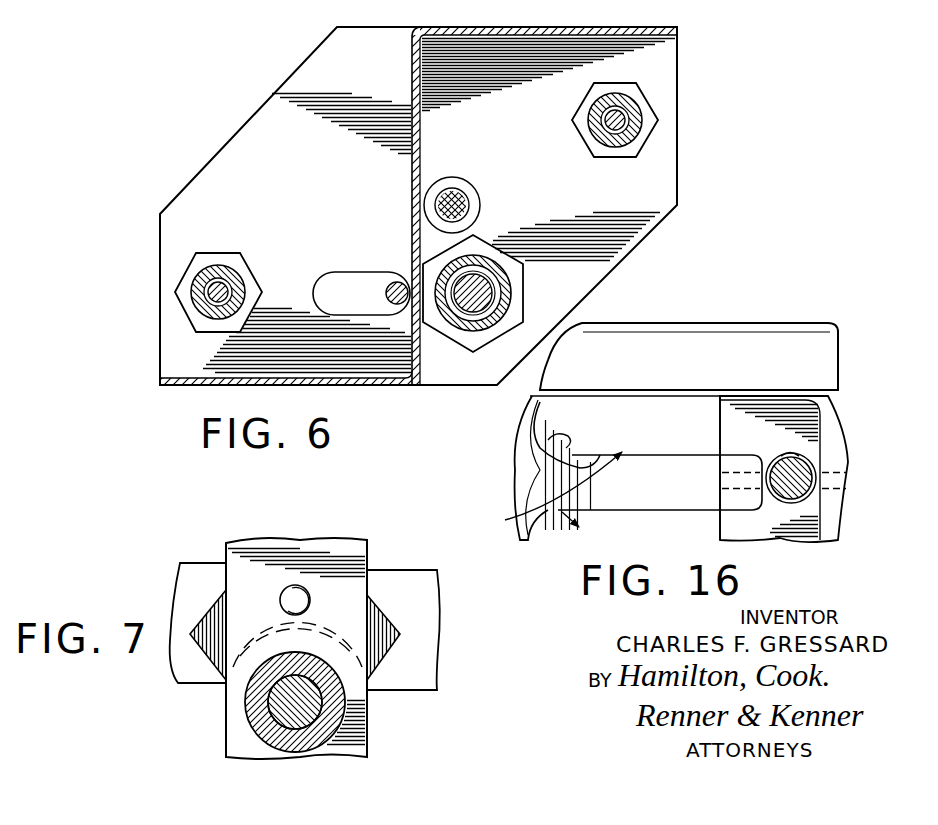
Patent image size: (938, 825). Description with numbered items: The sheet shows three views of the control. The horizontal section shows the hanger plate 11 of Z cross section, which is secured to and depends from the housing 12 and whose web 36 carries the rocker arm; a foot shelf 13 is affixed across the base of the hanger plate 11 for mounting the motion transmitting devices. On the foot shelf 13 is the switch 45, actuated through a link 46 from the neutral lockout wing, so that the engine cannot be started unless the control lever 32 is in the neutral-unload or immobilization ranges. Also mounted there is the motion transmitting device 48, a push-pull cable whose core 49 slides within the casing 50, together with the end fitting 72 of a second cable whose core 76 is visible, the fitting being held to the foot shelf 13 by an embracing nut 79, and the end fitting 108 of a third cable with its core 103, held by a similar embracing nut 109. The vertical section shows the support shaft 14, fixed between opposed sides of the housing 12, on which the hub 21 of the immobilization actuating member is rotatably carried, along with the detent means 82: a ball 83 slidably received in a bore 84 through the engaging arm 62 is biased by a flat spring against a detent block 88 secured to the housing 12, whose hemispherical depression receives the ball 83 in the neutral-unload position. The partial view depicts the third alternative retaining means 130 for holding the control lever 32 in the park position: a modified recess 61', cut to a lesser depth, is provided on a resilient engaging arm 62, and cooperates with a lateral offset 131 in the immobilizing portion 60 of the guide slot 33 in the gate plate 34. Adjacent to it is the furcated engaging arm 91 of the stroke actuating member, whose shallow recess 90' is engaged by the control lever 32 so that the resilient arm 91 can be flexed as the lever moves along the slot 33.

In FIG. 6, the hanger plate 11 is at (682, 32).
In FIG. 6, the foot shelf 13 is at (676, 200).
In FIG. 6, the web 36 is at (423, 136).
In FIG. 6, the switch 45 is at (512, 293).
In FIG. 6, the link 46 is at (384, 293).
In FIG. 6, the motion transmitting device 48 is at (474, 203).
In FIG. 6, the core 49 is at (462, 212).
In FIG. 6, the casing 50 is at (445, 185).
In FIG. 6, the end fitting 72 is at (640, 138).
In FIG. 6, the core 76 is at (620, 118).
In FIG. 6, the nut 79 is at (645, 118).
In FIG. 6, the core 103 is at (214, 292).
In FIG. 6, the end fitting 108 is at (200, 287).
In FIG. 6, the nut 109 is at (220, 262).
In FIG. 7, the housing 12 is at (410, 600).
In FIG. 7, the support shaft 14 is at (318, 712).
In FIG. 7, the hub 21 is at (255, 712).
In FIG. 16, the engaging arm 62 is at (726, 427).
In FIG. 7, the engaging arm 62 is at (358, 553).
In FIG. 7, the detent means 82 is at (302, 582).
In FIG. 7, the ball 83 is at (290, 600).
In FIG. 7, the bore 84 is at (308, 607).
In FIG. 7, the detent block 88 is at (400, 638).
In FIG. 16, the control lever 32 is at (790, 497).
In FIG. 16, the guide slot 33 is at (548, 495).
In FIG. 16, the gate plate 34 is at (548, 487).
In FIG. 16, the immobilizing portion 60 is at (650, 410).
In FIG. 16, the modified recess 61' is at (768, 440).
In FIG. 16, the recess 90' is at (814, 518).
In FIG. 16, the furcated engaging arm 91 is at (726, 528).
In FIG. 16, the retaining means 130 is at (578, 442).
In FIG. 16, the lateral offset 131 is at (540, 443).